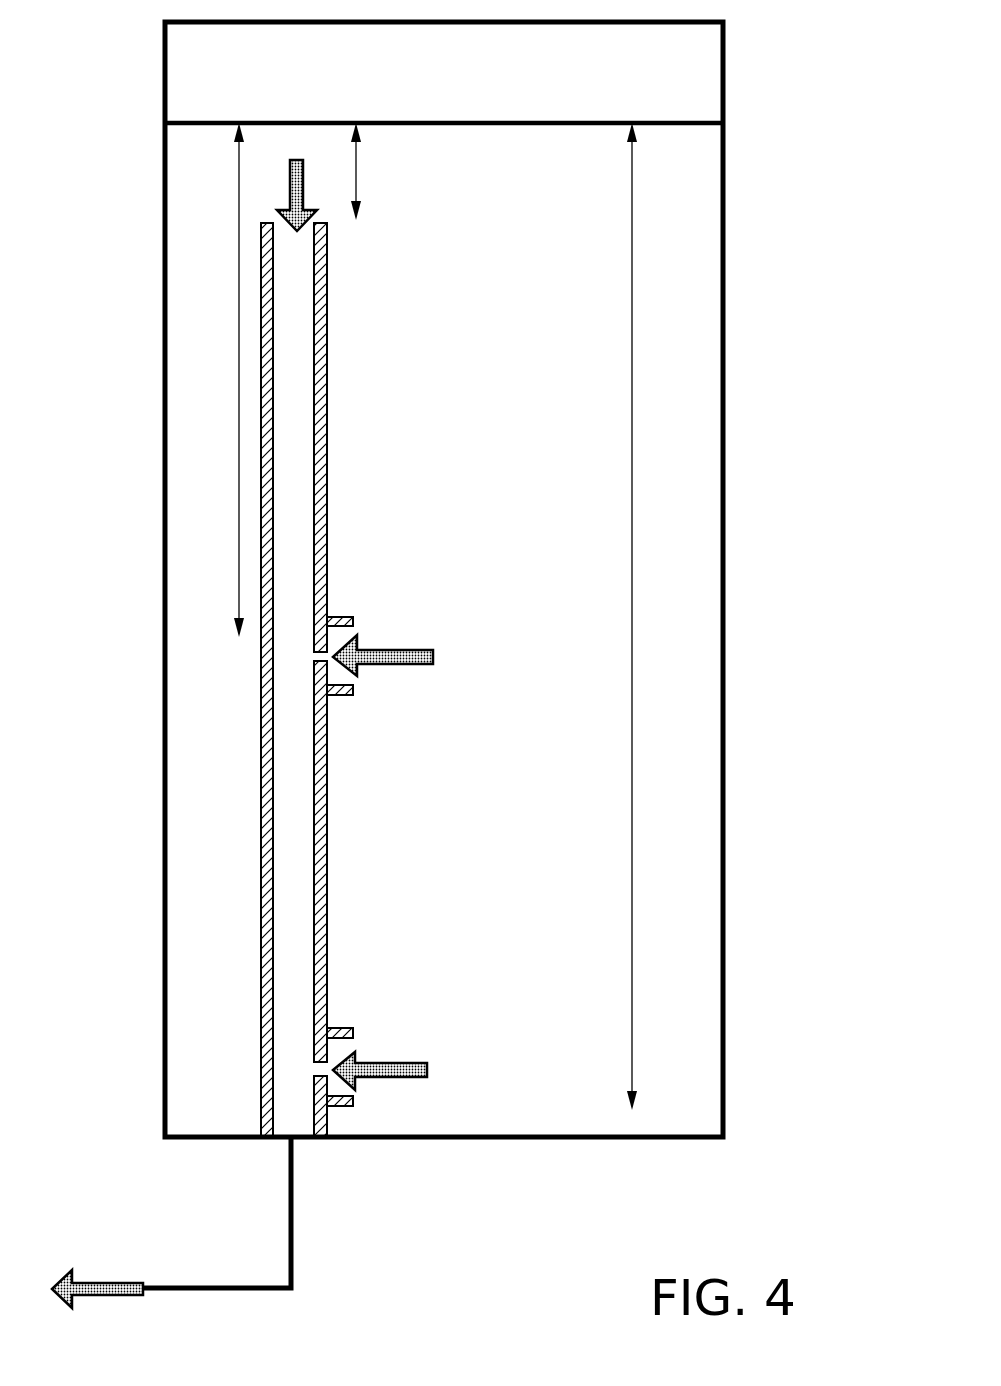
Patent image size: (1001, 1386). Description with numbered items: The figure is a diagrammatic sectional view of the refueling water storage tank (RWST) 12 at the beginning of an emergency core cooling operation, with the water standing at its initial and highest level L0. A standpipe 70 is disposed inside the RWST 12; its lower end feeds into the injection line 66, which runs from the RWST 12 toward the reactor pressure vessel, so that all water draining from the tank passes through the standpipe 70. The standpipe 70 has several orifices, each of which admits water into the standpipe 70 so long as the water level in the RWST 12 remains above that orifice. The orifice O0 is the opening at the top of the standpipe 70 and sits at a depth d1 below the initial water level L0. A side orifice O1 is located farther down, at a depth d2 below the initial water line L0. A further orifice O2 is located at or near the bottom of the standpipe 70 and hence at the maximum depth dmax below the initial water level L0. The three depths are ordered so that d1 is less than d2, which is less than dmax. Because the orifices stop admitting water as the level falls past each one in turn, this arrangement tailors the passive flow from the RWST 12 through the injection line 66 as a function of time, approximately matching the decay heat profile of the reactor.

The refueling water storage tank (RWST) 12 is at (484, 443).
The initial water level L0 is at (742, 123).
The standpipe 70 is at (236, 877).
The orifice O0 is at (278, 222).
The orifice O1 is at (294, 657).
The orifice O2 is at (293, 1067).
The depth d1 is at (353, 181).
The depth d2 is at (237, 427).
The maximum depth dmax is at (630, 584).
The injection line 66 is at (300, 1255).